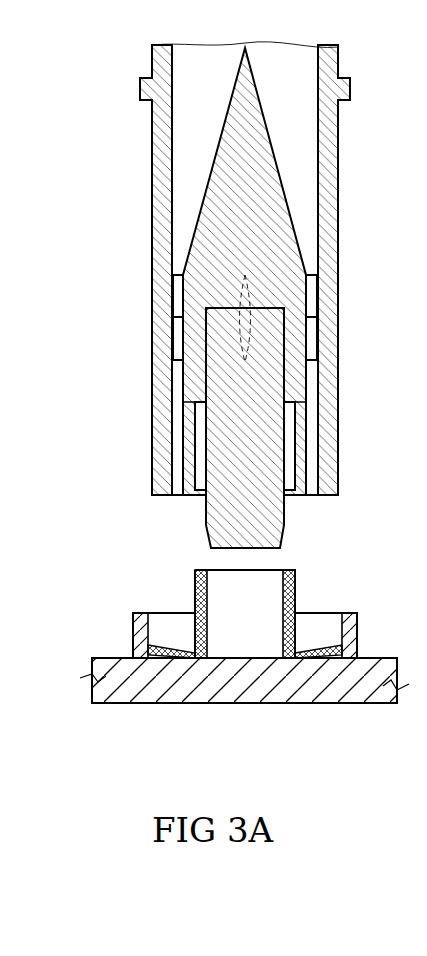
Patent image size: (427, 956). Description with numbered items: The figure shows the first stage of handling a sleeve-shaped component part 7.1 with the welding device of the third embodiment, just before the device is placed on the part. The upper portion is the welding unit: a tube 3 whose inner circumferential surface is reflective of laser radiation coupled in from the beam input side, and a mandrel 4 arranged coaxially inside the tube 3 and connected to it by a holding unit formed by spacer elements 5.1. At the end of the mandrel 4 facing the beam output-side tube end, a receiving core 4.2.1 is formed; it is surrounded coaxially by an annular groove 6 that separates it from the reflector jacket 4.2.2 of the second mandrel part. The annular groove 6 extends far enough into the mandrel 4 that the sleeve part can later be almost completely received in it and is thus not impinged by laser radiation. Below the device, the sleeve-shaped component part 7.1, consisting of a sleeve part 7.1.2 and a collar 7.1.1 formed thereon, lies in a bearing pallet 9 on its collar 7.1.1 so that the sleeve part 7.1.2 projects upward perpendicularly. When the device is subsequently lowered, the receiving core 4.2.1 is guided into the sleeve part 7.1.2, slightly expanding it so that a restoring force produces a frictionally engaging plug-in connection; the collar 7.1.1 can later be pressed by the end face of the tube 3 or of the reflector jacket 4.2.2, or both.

The tube 3 is at (327, 238).
The mandrel 4 is at (281, 181).
The spacer elements 5.1 is at (311, 294).
The reflector jacket 4.2.2 is at (297, 426).
The annular groove 6 is at (288, 470).
The receiving core 4.2.1 is at (283, 525).
The bearing pallet 9 is at (160, 683).
The sleeve-shaped component part 7.1 is at (237, 673).
The sleeve part 7.1.2 is at (284, 620).
The collar 7.1.1 is at (320, 657).